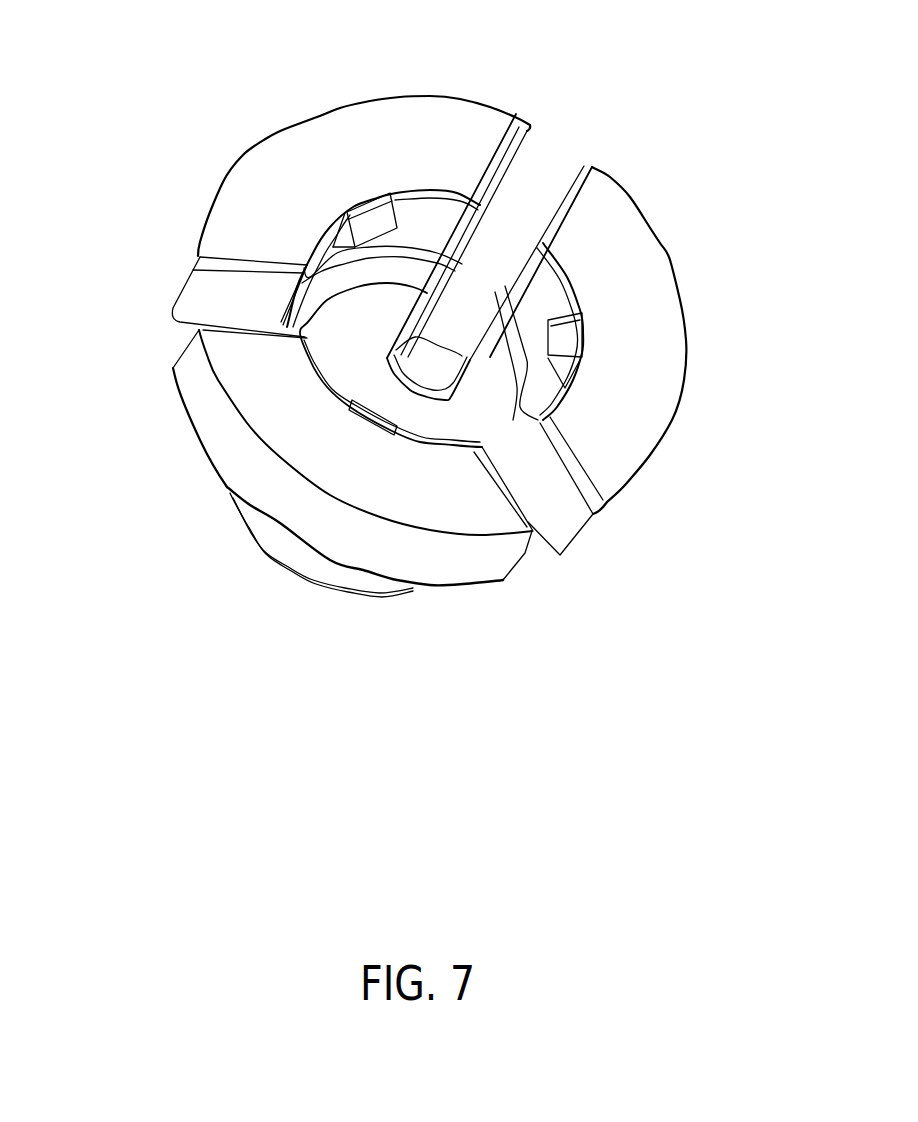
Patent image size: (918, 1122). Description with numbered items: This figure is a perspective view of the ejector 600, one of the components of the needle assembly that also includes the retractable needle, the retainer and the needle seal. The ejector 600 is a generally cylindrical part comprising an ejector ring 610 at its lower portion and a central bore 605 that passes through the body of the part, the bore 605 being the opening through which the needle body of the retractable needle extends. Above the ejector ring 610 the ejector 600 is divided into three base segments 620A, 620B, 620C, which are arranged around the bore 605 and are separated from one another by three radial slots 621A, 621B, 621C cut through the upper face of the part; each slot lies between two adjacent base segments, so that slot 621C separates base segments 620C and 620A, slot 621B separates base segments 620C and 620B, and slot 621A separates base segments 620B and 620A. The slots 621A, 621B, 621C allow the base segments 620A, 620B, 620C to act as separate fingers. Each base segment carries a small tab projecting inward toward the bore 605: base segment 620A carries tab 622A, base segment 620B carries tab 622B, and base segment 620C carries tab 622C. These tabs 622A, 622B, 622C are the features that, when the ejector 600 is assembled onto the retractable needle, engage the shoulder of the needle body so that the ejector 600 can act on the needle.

The ejector 600 is at (362, 617).
The bore 605 is at (368, 354).
The ejector ring 610 is at (250, 541).
The base segment 620A is at (447, 558).
The base segment 620B is at (606, 285).
The base segment 620C is at (279, 176).
The slot 621A is at (540, 502).
The slot 621B is at (525, 192).
The slot 621C is at (230, 291).
The tab 622A is at (370, 422).
The tab 622B is at (572, 335).
The tab 622C is at (380, 200).